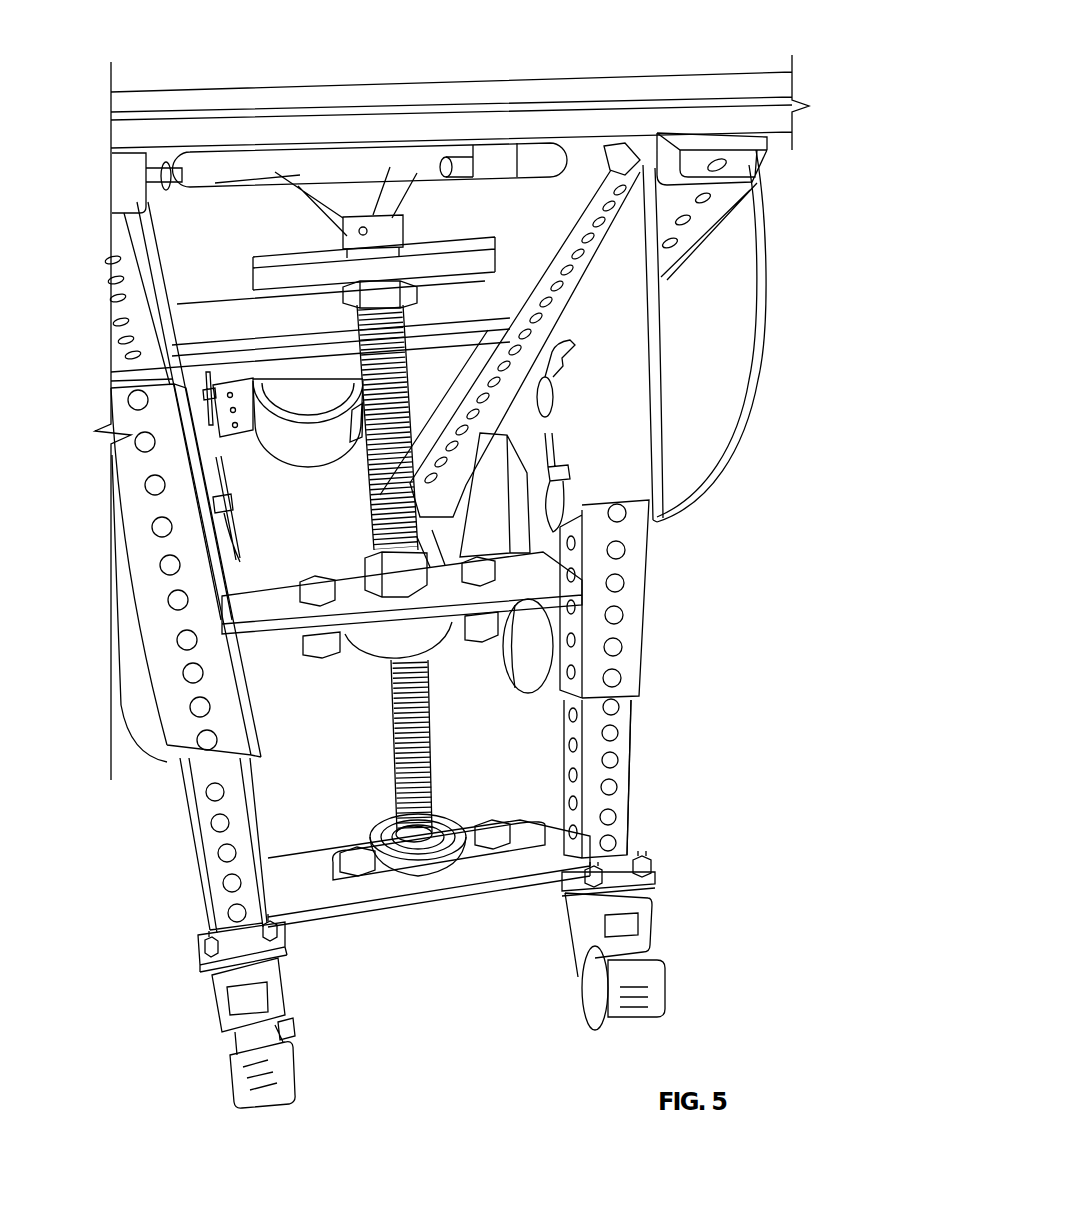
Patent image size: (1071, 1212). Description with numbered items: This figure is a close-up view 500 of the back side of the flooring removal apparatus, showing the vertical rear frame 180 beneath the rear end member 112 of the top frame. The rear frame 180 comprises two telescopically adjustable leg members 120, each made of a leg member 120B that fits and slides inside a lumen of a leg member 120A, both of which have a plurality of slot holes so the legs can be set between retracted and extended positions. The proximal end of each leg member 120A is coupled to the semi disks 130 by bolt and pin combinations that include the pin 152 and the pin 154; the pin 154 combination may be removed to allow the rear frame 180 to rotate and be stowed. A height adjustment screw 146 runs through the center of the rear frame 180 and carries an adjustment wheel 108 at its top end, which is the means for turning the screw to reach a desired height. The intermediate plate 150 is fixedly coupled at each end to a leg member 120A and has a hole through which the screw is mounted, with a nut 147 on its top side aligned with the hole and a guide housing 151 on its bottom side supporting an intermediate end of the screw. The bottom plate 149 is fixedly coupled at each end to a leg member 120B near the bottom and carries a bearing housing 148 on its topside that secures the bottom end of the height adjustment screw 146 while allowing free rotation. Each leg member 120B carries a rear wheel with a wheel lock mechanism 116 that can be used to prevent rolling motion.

The close-up view of the back side of the flooring removal apparatus 500 is at (748, 38).
The rear end member 112 is at (222, 132).
The adjustment wheel 108 is at (290, 160).
The semi disks 130 is at (762, 297).
The pin 152 is at (553, 395).
The pin 154 is at (567, 500).
The nut 147 is at (365, 572).
The leg members 120 is at (387, 567).
The leg member 120A is at (190, 757).
The leg member 120B is at (192, 852).
The vertical rear frame 180 is at (640, 818).
The intermediate plate 150 is at (372, 618).
The guide housing 151 is at (443, 620).
The height adjustment screw 146 is at (393, 745).
The bearing housing 148 is at (437, 882).
The bottom plate 149 is at (537, 878).
The wheel lock mechanism 116 is at (285, 1070).